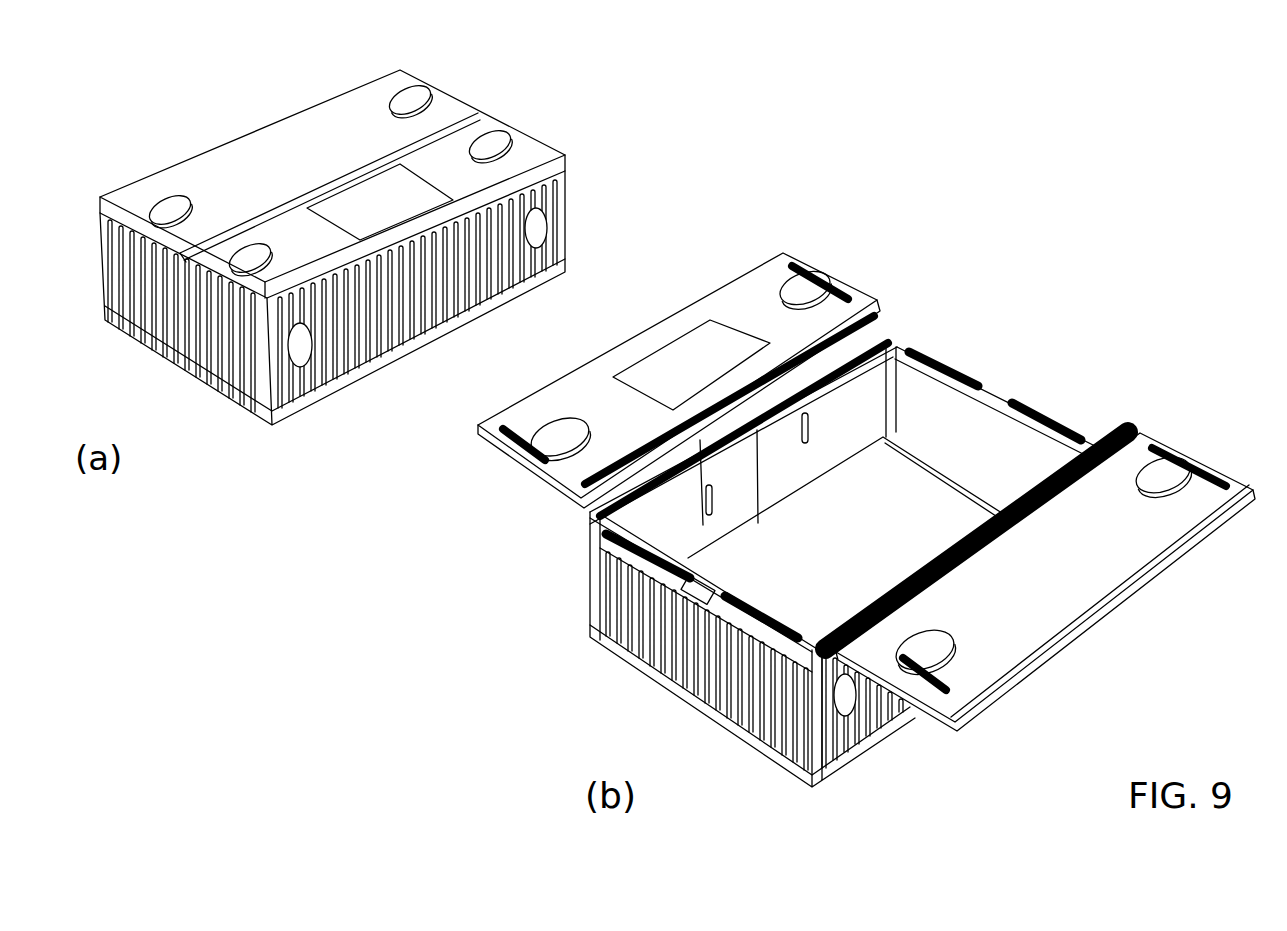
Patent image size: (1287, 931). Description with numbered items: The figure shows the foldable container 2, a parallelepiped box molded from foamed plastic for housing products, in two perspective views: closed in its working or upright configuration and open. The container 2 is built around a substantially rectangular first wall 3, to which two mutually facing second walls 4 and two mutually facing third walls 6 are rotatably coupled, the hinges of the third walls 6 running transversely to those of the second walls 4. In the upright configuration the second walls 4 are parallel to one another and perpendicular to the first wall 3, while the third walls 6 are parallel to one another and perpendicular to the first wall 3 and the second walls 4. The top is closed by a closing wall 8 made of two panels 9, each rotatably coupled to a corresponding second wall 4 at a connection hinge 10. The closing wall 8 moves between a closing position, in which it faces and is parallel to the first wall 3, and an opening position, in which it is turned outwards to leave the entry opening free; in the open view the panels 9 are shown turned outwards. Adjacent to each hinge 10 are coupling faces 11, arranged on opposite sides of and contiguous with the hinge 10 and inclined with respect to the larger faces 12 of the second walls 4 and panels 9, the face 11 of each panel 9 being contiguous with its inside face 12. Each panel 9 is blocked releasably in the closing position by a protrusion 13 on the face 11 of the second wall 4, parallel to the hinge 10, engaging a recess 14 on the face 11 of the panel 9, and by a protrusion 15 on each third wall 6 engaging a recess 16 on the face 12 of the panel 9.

The foldable container 2 is at (522, 82).
The first wall 3 is at (960, 446).
The second walls 4 is at (392, 380).
The third walls 6 is at (150, 352).
The closing wall 8 is at (240, 110).
The panels 9 is at (318, 120).
The connection hinge 10 is at (566, 166).
The coupling faces 11 is at (585, 508).
The larger faces 12 is at (588, 400).
The protrusion 13 is at (885, 330).
The recess 14 is at (745, 290).
The protrusion 15 is at (940, 353).
The recess 16 is at (808, 266).